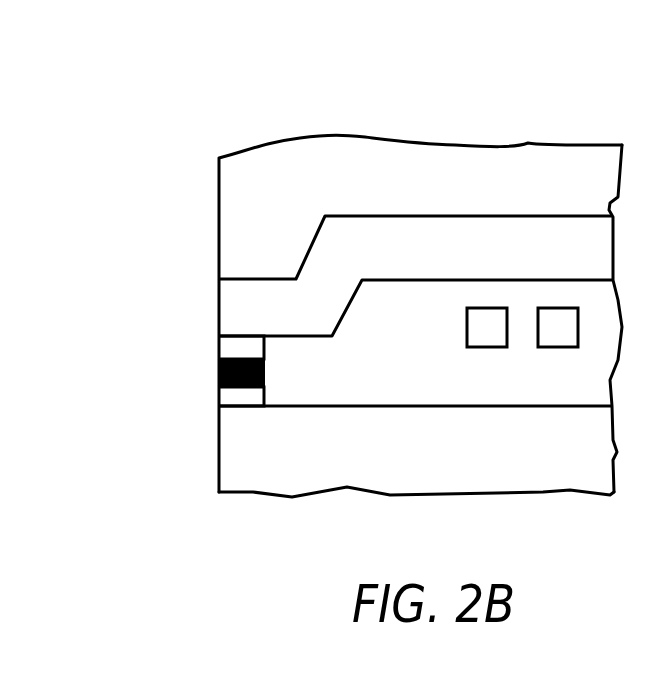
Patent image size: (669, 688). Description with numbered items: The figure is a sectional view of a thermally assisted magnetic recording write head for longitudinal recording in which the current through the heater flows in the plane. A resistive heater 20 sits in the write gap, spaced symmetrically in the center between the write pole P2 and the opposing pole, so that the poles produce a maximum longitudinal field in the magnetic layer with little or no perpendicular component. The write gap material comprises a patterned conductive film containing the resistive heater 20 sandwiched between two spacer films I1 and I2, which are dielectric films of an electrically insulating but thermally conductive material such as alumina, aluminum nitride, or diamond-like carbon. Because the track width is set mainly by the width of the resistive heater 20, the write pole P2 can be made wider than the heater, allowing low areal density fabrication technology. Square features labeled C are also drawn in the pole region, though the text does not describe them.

The write pole P2 is at (251, 319).
The contacts C is at (555, 327).
The spacer film I2 is at (232, 350).
The resistive heater 20 is at (218, 375).
The spacer film I1 is at (225, 395).